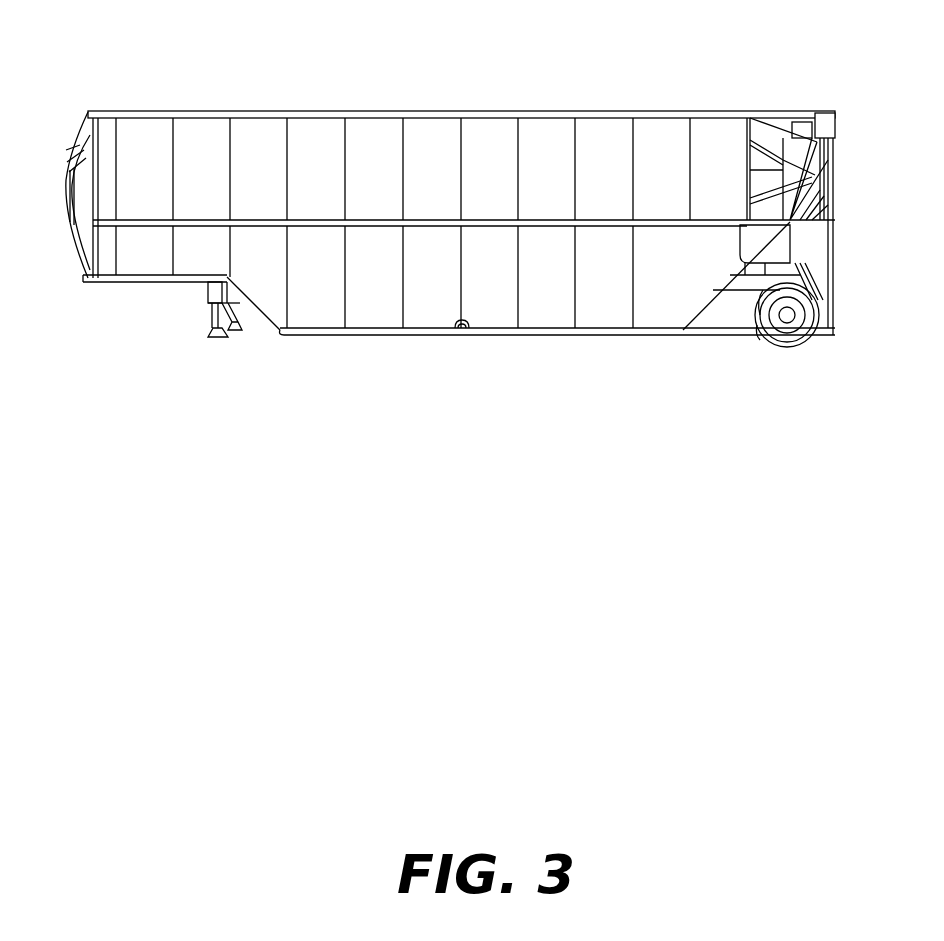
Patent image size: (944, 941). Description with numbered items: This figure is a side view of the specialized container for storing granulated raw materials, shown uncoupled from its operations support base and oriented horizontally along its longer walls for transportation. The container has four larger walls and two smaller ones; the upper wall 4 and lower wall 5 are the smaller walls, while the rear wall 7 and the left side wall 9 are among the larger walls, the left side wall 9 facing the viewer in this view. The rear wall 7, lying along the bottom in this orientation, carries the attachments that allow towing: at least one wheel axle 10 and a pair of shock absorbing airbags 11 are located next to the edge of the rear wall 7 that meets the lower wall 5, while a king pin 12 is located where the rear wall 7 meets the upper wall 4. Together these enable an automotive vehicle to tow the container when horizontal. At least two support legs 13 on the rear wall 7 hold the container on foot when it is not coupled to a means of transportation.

The upper wall 4 is at (80, 155).
The lower wall 5 is at (760, 132).
The rear wall 7 is at (462, 336).
The left side wall 9 is at (425, 170).
The wheel axle 10 is at (745, 337).
The shock absorbing airbags 11 is at (700, 330).
The king pin 12 is at (120, 283).
The support legs 13 is at (205, 312).